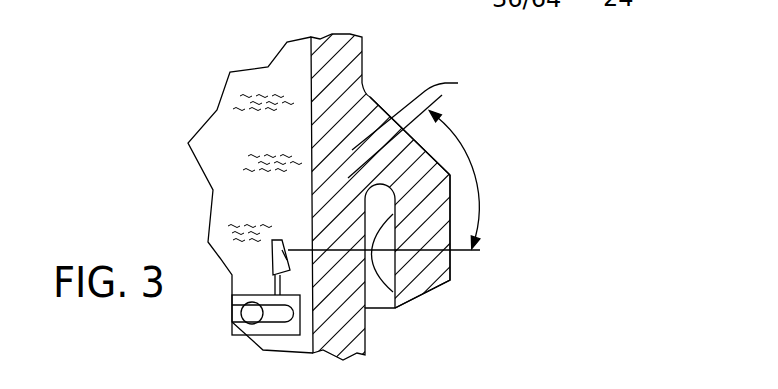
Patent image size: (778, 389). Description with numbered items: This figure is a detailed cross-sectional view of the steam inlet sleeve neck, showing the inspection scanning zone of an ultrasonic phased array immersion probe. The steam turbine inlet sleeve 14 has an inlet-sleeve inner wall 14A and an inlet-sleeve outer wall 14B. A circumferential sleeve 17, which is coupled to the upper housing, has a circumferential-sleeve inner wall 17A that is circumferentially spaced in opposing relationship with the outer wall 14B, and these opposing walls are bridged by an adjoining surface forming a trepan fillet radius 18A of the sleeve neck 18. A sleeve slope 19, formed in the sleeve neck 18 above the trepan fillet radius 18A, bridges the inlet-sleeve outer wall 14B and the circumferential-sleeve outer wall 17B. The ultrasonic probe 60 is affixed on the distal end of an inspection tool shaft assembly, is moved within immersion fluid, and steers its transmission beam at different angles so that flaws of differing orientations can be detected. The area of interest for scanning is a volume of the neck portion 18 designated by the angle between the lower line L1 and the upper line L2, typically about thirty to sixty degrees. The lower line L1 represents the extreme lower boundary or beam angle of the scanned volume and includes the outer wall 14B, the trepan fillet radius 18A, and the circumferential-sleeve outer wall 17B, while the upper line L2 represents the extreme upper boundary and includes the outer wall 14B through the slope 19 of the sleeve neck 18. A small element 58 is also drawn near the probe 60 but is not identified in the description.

The steam turbine inlet sleeve 14 is at (389, 70).
The inlet-sleeve inner wall 14A is at (311, 186).
The inlet-sleeve outer wall 14B is at (365, 280).
The circumferential sleeve 17 is at (452, 290).
The circumferential-sleeve inner wall 17A is at (420, 298).
The circumferential-sleeve outer wall 17B is at (452, 200).
The sleeve neck 18 is at (442, 92).
The trepan fillet radius 18A is at (445, 170).
The sleeve slope 19 is at (450, 152).
The fastener block 58 is at (262, 350).
The ultrasonic probe 60 is at (272, 260).
The lower line L1 is at (480, 250).
The upper line L2 is at (458, 83).